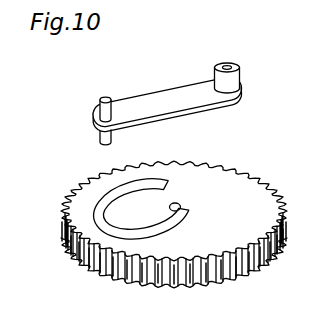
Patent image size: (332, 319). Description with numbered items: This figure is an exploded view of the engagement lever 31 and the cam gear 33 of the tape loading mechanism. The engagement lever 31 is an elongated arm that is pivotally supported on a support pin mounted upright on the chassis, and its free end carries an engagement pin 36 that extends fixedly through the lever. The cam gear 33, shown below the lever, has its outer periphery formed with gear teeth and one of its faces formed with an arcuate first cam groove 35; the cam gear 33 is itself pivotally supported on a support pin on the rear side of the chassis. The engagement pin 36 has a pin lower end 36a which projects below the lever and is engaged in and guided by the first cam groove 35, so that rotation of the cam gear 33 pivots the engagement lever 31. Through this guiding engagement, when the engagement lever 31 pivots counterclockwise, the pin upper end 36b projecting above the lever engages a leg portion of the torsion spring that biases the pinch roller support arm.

The engagement lever 31 is at (166, 96).
The cam gear 33 is at (253, 192).
The first cam groove 35 is at (93, 212).
The engagement pin 36 is at (64, 111).
The pin lower end 36a is at (100, 138).
The pin upper end 36b is at (97, 113).